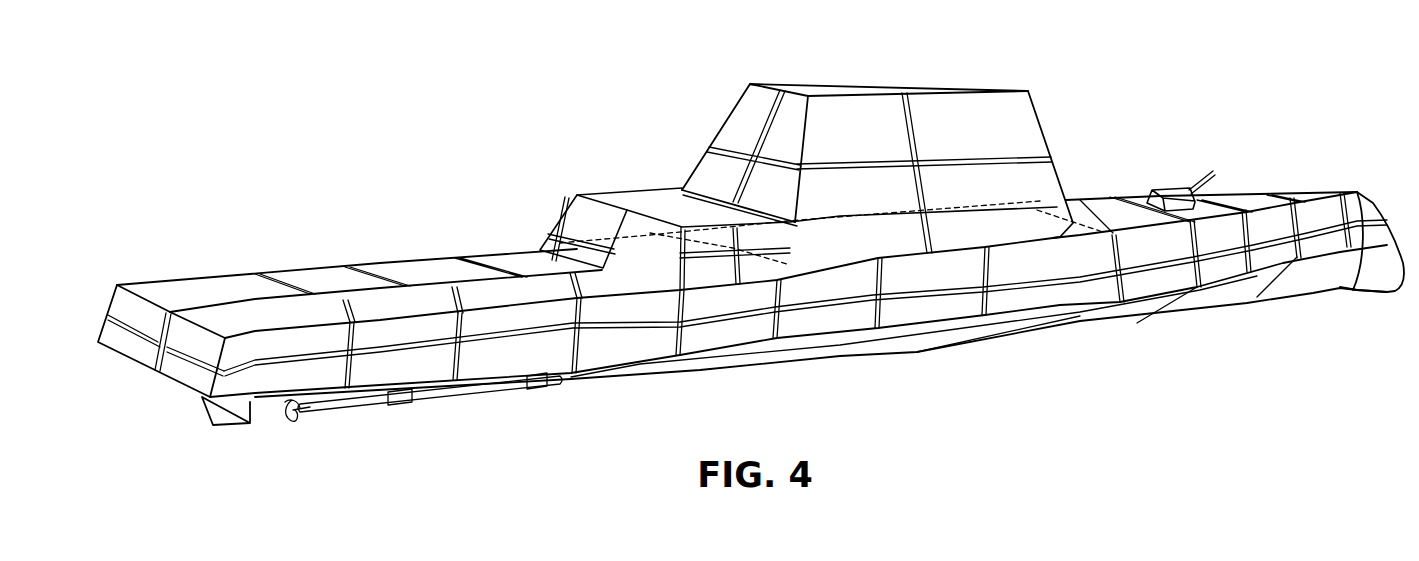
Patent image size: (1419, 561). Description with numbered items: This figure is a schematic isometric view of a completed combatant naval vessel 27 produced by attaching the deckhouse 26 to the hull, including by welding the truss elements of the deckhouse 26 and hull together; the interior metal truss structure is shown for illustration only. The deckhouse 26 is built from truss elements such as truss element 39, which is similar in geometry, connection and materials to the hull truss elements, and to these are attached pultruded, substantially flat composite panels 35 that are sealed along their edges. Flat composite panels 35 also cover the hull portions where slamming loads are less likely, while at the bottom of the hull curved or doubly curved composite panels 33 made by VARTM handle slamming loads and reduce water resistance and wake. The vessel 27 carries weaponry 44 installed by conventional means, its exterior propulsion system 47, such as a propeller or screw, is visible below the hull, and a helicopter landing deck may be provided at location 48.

The deckhouse 26 is at (730, 89).
The combatant marine vessel 27 is at (1224, 176).
The curved composite panels 33 is at (912, 348).
The flat composite panels 35 is at (226, 283).
The truss element 39 is at (699, 162).
The weaponry 44 is at (1173, 190).
The exterior propulsion system 47 is at (354, 413).
The helicopter landing deck location 48 is at (347, 287).